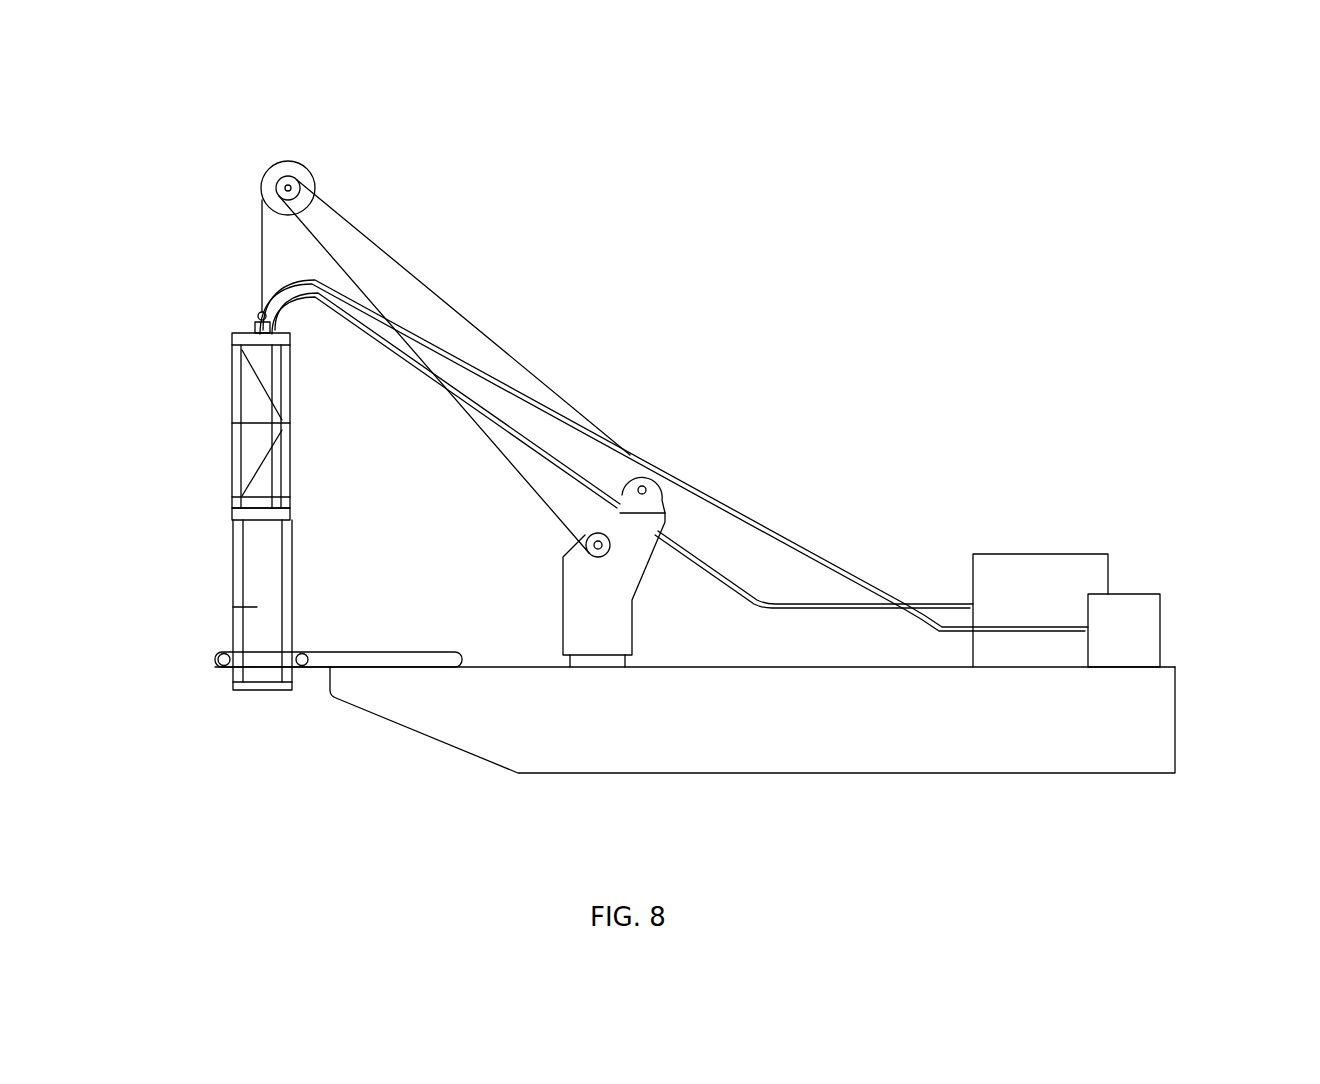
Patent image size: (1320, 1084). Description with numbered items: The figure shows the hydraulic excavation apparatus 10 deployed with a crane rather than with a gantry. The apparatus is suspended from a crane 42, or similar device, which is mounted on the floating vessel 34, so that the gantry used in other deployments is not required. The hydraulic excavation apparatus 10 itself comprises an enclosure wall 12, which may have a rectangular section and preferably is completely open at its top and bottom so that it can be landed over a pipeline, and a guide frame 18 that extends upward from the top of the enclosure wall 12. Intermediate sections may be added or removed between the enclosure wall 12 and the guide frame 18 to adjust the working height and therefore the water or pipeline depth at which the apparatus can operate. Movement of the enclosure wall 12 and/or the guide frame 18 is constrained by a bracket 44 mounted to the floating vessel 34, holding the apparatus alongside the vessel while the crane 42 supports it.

The hydraulic excavation apparatus 10 is at (228, 295).
The enclosure wall 12 is at (232, 580).
The guide frame 18 is at (232, 403).
The floating vessel 34 is at (1177, 668).
The crane 42 is at (305, 178).
The bracket 44 is at (210, 669).